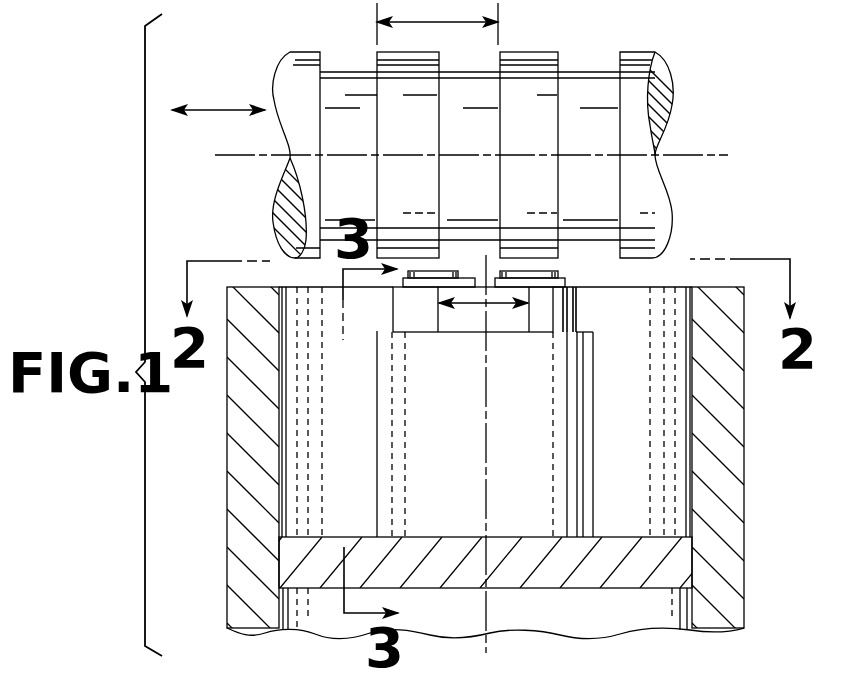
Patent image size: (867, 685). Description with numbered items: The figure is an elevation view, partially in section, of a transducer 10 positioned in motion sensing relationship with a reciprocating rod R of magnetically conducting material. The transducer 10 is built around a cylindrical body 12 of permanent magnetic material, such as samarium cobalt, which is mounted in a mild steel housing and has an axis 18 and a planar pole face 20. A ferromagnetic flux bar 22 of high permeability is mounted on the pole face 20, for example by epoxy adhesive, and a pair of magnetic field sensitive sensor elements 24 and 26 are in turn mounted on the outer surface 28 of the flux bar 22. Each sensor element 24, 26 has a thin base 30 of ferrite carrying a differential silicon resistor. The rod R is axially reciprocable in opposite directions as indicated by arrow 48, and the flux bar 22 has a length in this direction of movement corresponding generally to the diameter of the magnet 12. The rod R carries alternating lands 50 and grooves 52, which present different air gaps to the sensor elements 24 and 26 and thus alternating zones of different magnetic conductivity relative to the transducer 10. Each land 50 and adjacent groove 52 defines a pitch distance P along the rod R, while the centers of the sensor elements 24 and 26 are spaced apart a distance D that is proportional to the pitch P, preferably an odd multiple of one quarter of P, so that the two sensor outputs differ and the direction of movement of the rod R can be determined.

The transducer 10 is at (715, 248).
The cylindrical body of permanent magnetic material 12 is at (596, 423).
The axis 18 is at (484, 472).
The planar pole face 20 is at (587, 326).
The ferromagnetic flux bar 22 is at (413, 310).
The sensor element 24 is at (445, 267).
The sensor element 26 is at (560, 265).
The outer surface 28 is at (570, 285).
The thin base 30 is at (422, 280).
The arrow 48 is at (222, 110).
The land 50 is at (533, 52).
The groove 52 is at (592, 72).
The pitch distance P is at (437, 22).
The distance D is at (483, 316).
The rod R is at (677, 75).